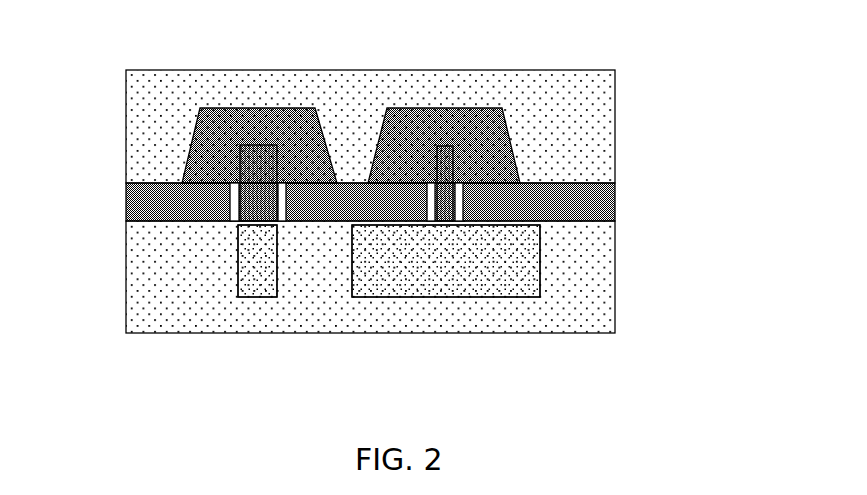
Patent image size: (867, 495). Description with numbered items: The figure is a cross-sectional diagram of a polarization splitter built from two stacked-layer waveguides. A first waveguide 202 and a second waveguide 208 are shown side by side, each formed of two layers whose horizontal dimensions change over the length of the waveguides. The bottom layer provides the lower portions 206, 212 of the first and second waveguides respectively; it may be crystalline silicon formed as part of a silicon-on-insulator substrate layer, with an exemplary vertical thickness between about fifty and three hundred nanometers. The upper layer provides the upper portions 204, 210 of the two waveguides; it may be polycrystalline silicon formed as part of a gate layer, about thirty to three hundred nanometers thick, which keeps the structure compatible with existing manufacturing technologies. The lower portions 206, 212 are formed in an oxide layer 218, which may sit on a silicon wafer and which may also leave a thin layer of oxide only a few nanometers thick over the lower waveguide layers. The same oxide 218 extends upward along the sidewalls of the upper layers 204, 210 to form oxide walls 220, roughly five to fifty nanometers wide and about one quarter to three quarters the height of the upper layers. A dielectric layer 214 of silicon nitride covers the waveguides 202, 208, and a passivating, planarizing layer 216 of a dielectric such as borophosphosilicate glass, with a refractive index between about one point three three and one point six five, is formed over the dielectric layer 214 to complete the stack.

The first waveguide 202 is at (258, 297).
The upper layer of the first waveguide 204 is at (240, 166).
The lower portion of the first waveguide 206 is at (238, 288).
The second waveguide 208 is at (445, 297).
The upper layer of the second waveguide 210 is at (453, 163).
The lower portion of the second waveguide 212 is at (540, 288).
The dielectric layer 214 is at (615, 198).
The planarizing layer 216 is at (615, 105).
The oxide layer 218 is at (615, 318).
The oxide walls 220 is at (283, 182).